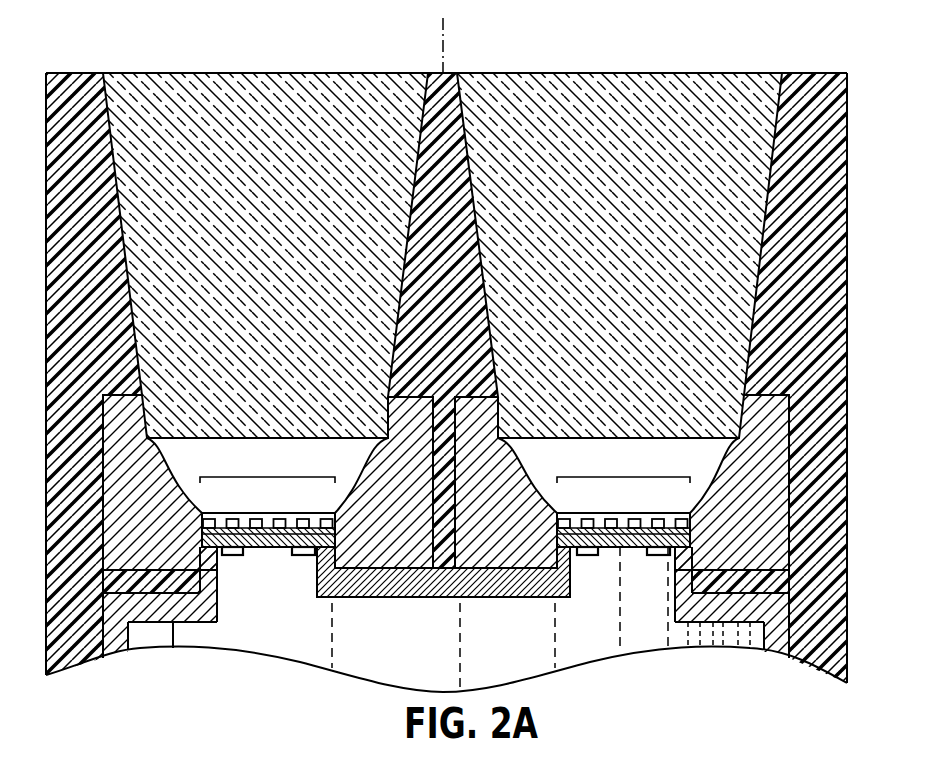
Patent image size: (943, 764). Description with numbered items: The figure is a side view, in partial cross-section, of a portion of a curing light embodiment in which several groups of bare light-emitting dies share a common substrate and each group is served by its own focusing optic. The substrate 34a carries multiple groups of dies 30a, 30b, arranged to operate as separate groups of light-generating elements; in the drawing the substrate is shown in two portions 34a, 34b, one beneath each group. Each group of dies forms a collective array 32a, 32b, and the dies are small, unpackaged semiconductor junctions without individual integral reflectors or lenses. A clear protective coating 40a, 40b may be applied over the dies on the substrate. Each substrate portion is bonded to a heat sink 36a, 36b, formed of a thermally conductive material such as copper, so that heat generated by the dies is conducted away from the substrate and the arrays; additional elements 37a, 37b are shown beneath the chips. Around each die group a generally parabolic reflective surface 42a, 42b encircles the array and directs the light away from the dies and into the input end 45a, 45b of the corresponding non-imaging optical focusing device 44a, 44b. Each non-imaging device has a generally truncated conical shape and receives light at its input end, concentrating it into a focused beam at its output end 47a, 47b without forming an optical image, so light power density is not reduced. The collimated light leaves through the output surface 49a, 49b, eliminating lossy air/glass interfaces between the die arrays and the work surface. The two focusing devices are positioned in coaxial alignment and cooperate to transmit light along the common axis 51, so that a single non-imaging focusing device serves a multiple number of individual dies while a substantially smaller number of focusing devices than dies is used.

The axis 51 is at (443, 58).
The non-imaging optical focusing device 44b is at (252, 181).
The non-imaging optical focusing device 44a is at (612, 181).
The output end 47b is at (162, 77).
The output end 47a is at (523, 77).
The output surface 49b is at (375, 77).
The output surface 49a is at (712, 75).
The input end 45b is at (198, 436).
The input end 45a is at (550, 436).
The reflective surface 42b is at (380, 438).
The reflective surface 42a is at (640, 438).
The clear protective coating 40b is at (170, 478).
The clear protective coating 40a is at (523, 480).
The light-emitting dies 30b is at (312, 512).
The light-emitting dies 30a is at (692, 512).
The array 32b is at (265, 477).
The array 32a is at (620, 477).
The substrate 34b is at (233, 556).
The substrate 34a is at (580, 556).
The heat sink 36b is at (267, 550).
The heat sink 36a is at (615, 550).
The second contact pad (left) 37b is at (303, 556).
The second contact pad (right) 37a is at (658, 556).